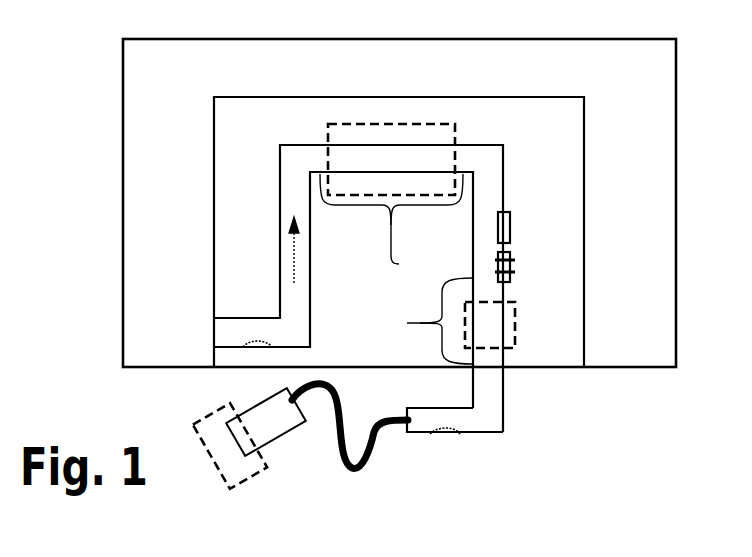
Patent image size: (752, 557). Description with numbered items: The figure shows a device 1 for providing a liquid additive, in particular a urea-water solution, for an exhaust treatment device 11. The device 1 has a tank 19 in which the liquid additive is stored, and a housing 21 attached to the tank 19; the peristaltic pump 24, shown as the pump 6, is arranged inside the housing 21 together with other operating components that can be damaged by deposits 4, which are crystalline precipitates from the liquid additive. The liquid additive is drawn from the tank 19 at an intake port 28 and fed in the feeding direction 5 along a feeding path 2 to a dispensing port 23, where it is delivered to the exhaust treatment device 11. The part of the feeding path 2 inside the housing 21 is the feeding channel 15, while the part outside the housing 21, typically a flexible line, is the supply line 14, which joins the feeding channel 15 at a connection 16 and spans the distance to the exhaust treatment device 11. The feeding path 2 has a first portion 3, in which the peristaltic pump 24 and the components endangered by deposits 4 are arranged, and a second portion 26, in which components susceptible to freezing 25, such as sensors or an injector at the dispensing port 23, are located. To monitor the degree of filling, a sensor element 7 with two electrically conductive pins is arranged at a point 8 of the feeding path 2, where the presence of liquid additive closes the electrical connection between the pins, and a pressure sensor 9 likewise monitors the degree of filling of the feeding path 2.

The device 1 is at (98, 33).
The feeding path 2 is at (505, 377).
The first portion 3 is at (392, 264).
The deposit 4 is at (246, 342).
The feeding direction 5 is at (290, 250).
The pump 6 is at (443, 123).
The sensor element 7 is at (512, 283).
The point 8 is at (498, 268).
The pressure sensor 9 is at (507, 210).
The exhaust treatment device 11 is at (232, 487).
The supply line 14 is at (377, 442).
The feeding channel 15 is at (505, 162).
The connection 16 is at (413, 436).
The tank 19 is at (123, 292).
The housing 21 is at (213, 244).
The dispensing port 23 is at (278, 436).
The peristaltic pump 24 is at (380, 124).
The components susceptible to freezing 25 is at (515, 326).
The second portion 26 is at (407, 323).
The intake port 28 is at (214, 342).